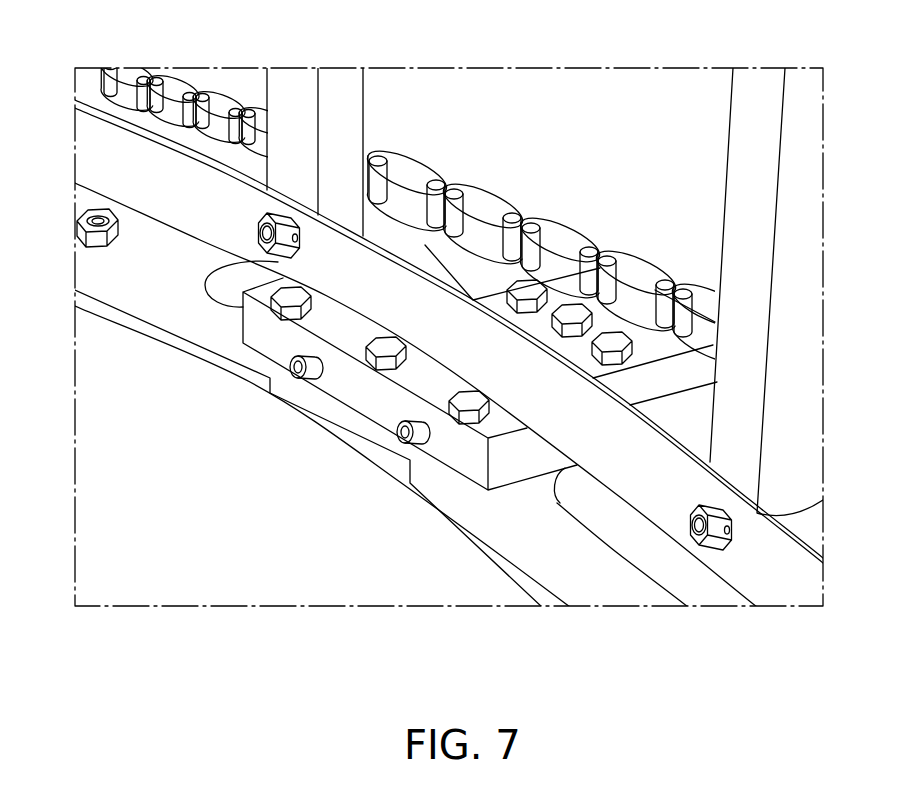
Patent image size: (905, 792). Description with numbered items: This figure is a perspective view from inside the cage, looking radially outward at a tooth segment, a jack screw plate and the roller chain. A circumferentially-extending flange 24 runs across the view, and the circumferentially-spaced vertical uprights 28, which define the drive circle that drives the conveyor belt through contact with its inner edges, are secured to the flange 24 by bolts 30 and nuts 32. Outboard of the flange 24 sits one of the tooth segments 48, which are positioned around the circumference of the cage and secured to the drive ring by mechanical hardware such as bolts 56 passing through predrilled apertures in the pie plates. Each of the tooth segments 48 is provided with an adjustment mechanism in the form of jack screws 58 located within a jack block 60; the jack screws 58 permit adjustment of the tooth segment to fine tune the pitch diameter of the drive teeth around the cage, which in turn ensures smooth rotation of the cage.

The flange 24 is at (647, 469).
The vertical uprights 28 is at (303, 136).
The bolts 30 is at (257, 242).
The nuts 32 is at (296, 240).
The tooth segments 48 is at (679, 402).
The bolts 56 is at (607, 348).
The jack screws 58 is at (397, 436).
The jack block 60 is at (503, 480).